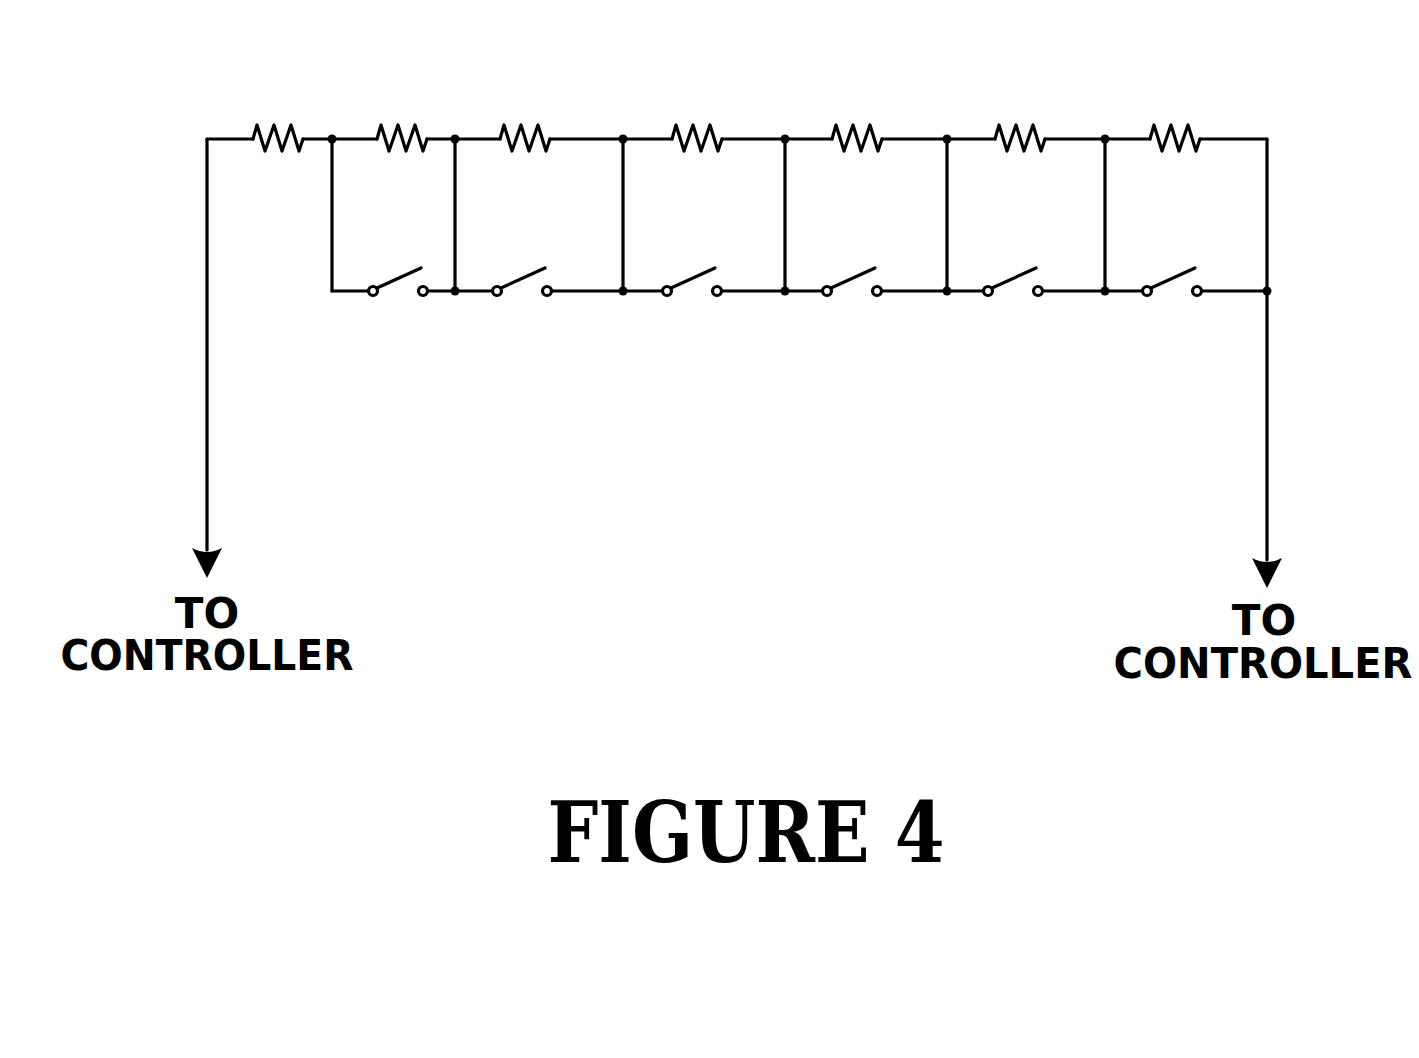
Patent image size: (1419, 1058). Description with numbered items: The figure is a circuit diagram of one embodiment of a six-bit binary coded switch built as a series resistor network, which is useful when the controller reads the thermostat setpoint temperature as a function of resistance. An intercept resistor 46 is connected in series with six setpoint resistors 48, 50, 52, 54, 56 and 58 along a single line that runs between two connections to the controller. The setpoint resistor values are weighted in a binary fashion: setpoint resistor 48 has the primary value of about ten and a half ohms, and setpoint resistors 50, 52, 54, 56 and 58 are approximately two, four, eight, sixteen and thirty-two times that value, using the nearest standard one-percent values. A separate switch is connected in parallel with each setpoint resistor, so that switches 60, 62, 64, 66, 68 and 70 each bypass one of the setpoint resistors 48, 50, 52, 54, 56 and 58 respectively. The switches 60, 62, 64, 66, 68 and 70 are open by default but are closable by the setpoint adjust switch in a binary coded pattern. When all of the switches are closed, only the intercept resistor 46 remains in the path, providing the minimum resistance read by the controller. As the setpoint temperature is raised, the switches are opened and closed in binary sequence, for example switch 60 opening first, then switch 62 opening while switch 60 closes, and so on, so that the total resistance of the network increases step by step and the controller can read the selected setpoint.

The intercept resistor 46 is at (297, 127).
The setpoint resistor 48 is at (421, 127).
The setpoint resistor 50 is at (544, 127).
The setpoint resistor 52 is at (716, 127).
The setpoint resistor 54 is at (876, 127).
The setpoint resistor 56 is at (1039, 127).
The setpoint resistor 58 is at (1194, 127).
The switch 60 is at (422, 297).
The switch 62 is at (546, 297).
The switch 64 is at (716, 297).
The switch 66 is at (876, 297).
The switch 68 is at (1037, 297).
The switch 70 is at (1196, 297).